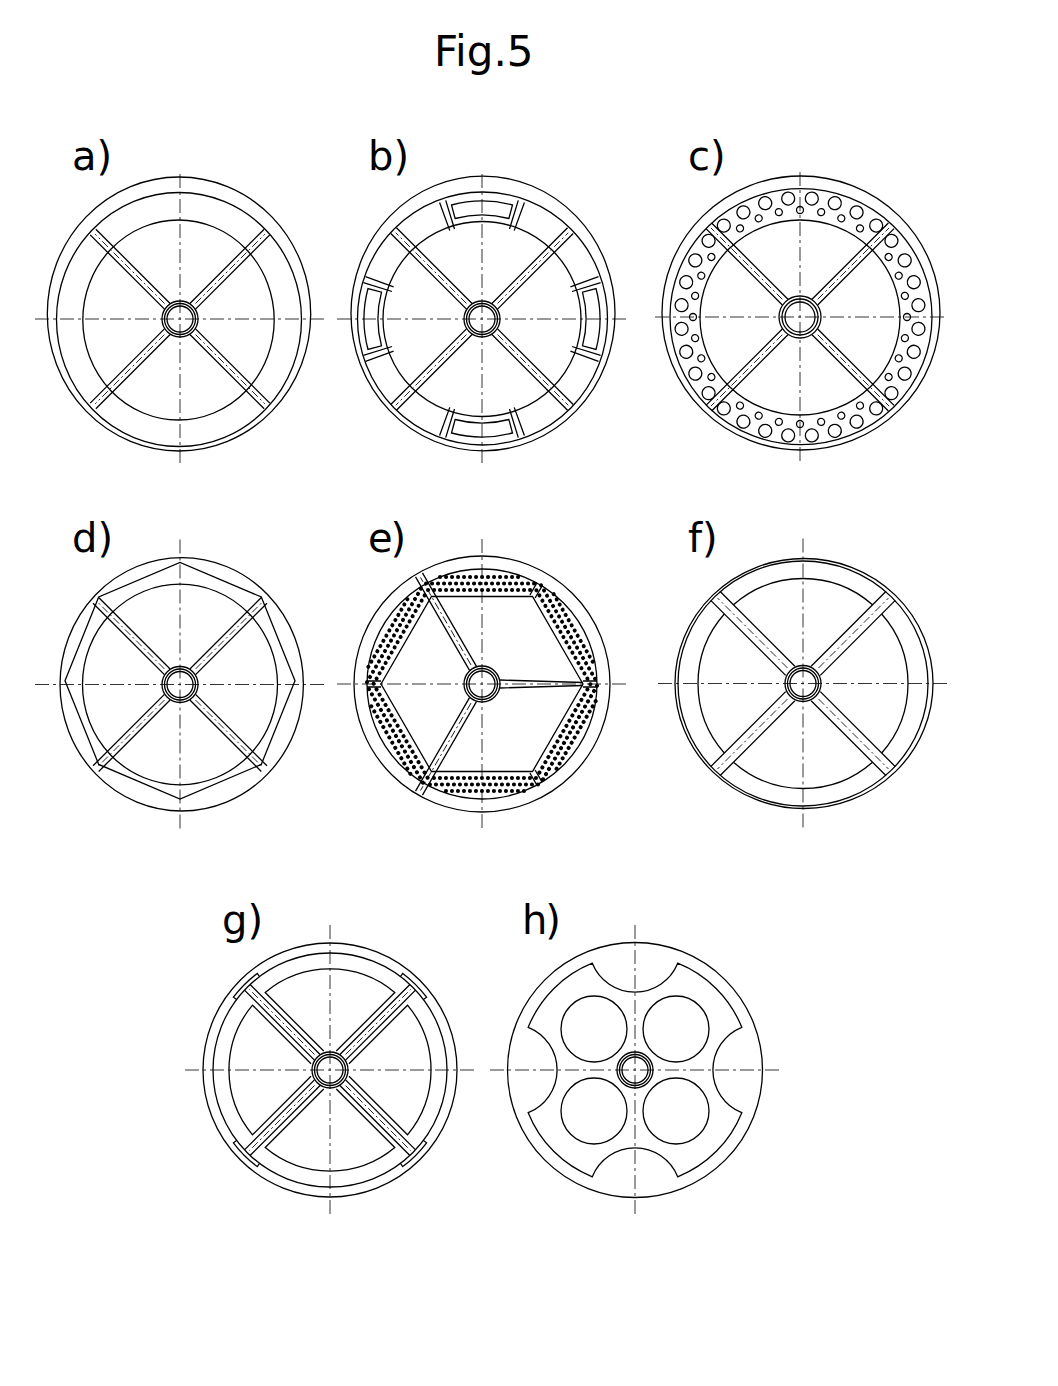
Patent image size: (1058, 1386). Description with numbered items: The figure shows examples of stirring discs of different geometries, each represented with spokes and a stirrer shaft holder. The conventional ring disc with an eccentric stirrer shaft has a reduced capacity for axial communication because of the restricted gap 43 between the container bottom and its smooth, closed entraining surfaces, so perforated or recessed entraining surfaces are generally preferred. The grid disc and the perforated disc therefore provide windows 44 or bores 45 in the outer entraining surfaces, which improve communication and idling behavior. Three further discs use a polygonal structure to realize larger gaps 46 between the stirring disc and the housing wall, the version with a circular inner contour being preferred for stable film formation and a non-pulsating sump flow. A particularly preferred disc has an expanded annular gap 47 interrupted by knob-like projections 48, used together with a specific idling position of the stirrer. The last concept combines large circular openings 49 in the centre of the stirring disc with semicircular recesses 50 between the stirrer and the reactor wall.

The gap 43 is at (400, 427).
The windows 44 is at (453, 443).
The bores 45 is at (755, 442).
The gaps 46 is at (735, 790).
The annular gap 47 is at (400, 1177).
The knob-like projections 48 is at (202, 1045).
The circular openings 49 is at (688, 1035).
The semicircular recesses 50 is at (650, 1168).